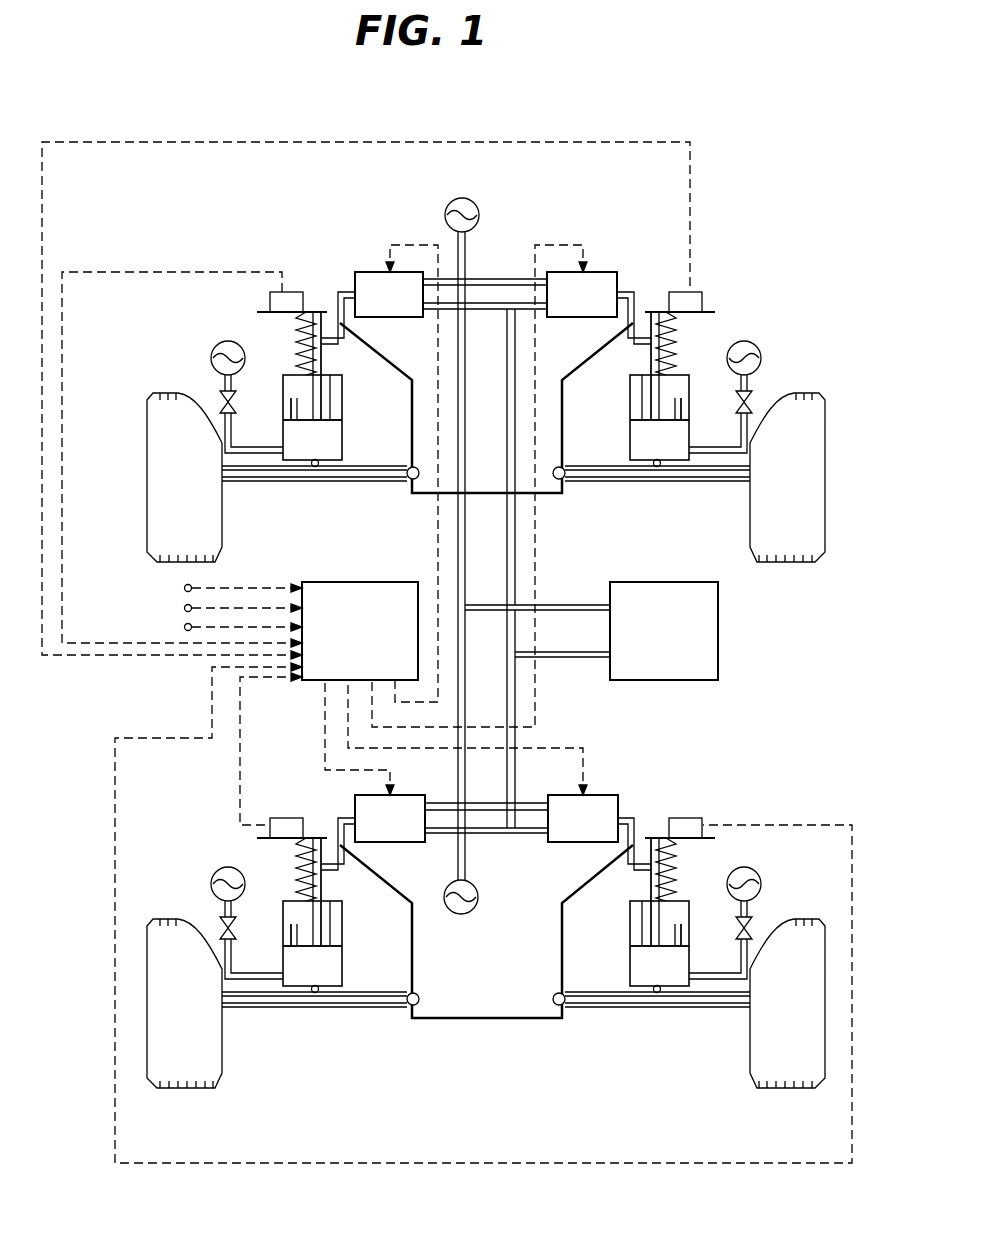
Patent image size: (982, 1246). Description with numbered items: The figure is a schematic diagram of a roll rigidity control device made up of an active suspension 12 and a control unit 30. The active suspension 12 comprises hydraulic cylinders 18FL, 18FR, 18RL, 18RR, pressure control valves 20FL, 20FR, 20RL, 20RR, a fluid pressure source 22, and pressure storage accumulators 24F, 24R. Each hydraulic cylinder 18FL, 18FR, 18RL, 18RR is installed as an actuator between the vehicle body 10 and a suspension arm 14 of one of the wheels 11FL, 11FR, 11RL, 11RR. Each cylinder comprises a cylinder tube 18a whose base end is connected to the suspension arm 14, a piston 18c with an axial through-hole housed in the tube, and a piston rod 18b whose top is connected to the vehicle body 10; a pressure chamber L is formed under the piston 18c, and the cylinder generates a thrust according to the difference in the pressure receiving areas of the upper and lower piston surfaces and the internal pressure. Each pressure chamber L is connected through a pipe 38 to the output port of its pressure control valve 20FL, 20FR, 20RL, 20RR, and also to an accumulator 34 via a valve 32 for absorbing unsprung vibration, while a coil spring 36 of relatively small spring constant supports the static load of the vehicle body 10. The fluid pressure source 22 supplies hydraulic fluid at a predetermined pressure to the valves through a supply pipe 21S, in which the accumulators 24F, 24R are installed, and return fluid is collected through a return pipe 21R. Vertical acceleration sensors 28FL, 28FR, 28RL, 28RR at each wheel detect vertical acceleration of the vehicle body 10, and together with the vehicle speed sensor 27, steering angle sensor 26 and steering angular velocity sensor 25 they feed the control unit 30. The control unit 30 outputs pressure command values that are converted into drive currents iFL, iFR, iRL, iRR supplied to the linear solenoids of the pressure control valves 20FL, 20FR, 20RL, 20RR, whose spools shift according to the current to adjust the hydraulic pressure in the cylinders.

The vehicle body 10 is at (487, 495).
The wheel 11FL is at (153, 452).
The wheel 11FR is at (820, 393).
The wheel 11RL is at (182, 1088).
The wheel 11RR is at (776, 1085).
The active suspension 12 is at (681, 710).
The suspension arm 14 is at (345, 483).
The hydraulic cylinder 18FL is at (351, 446).
The hydraulic cylinder 18FR is at (622, 450).
The hydraulic cylinder 18RL is at (351, 968).
The hydraulic cylinder 18RR is at (622, 972).
The cylinder tube 18a is at (343, 392).
The piston rod 18b is at (326, 360).
The piston 18c is at (343, 415).
The pressure control valve 20FL is at (360, 272).
The pressure control valve 20FR is at (607, 272).
The pressure control valve 20RL is at (415, 795).
The pressure control valve 20RR is at (606, 795).
The supply pipe 21S is at (566, 604).
The return pipe 21R is at (540, 653).
The fluid pressure source 22 is at (718, 605).
The pressure storage accumulator 24F is at (456, 200).
The pressure storage accumulator 24R is at (461, 915).
The steering angular velocity sensor 25 is at (184, 588).
The steering angle sensor 26 is at (184, 608).
The vehicle speed sensor 27 is at (184, 627).
The vertical acceleration sensor 28FL is at (280, 292).
The vertical acceleration sensor 28FR is at (703, 292).
The vertical acceleration sensor 28RL is at (281, 818).
The vertical acceleration sensor 28RR is at (703, 818).
The control unit 30 is at (378, 582).
The valve 32 is at (220, 396).
The accumulator 34 is at (213, 349).
The coil spring 36 is at (298, 338).
The pipe 38 is at (340, 290).
The pressure chamber L is at (306, 462).
The drive current iFL is at (414, 461).
The drive current iFR is at (477, 474).
The drive current iRL is at (338, 737).
The drive current iRR is at (465, 737).